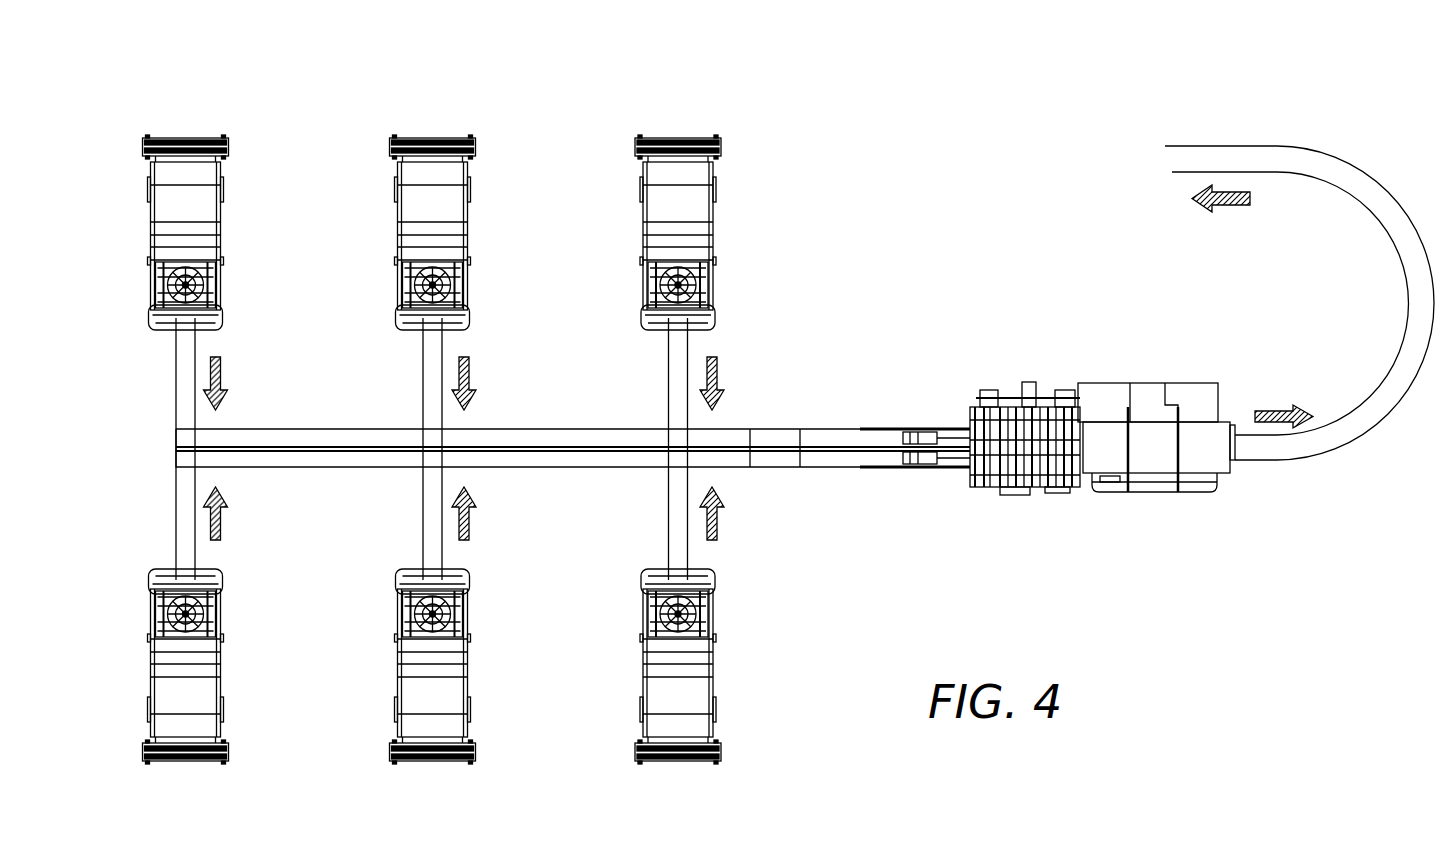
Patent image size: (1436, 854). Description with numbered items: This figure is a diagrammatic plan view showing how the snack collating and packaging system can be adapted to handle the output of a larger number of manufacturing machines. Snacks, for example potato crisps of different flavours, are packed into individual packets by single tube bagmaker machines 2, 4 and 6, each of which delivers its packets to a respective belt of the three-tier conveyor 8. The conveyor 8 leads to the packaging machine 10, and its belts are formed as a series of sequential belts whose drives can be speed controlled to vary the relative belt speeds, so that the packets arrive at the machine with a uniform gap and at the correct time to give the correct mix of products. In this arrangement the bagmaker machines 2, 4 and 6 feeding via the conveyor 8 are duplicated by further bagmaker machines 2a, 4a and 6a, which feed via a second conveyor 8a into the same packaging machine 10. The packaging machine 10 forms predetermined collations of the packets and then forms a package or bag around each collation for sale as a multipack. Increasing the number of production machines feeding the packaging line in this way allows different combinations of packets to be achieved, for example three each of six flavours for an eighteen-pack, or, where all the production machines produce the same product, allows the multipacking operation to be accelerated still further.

The bagmaker machine 2a is at (223, 273).
The bagmaker machine 4a is at (470, 273).
The bagmaker machine 6a is at (716, 273).
The single tube bagmaker machine 2 is at (223, 606).
The single tube bagmaker machine 4 is at (470, 606).
The single tube bagmaker machine 6 is at (716, 606).
The three-tier conveyor 8 is at (570, 458).
The second conveyor 8a is at (568, 437).
The packaging machine 10 is at (1085, 508).